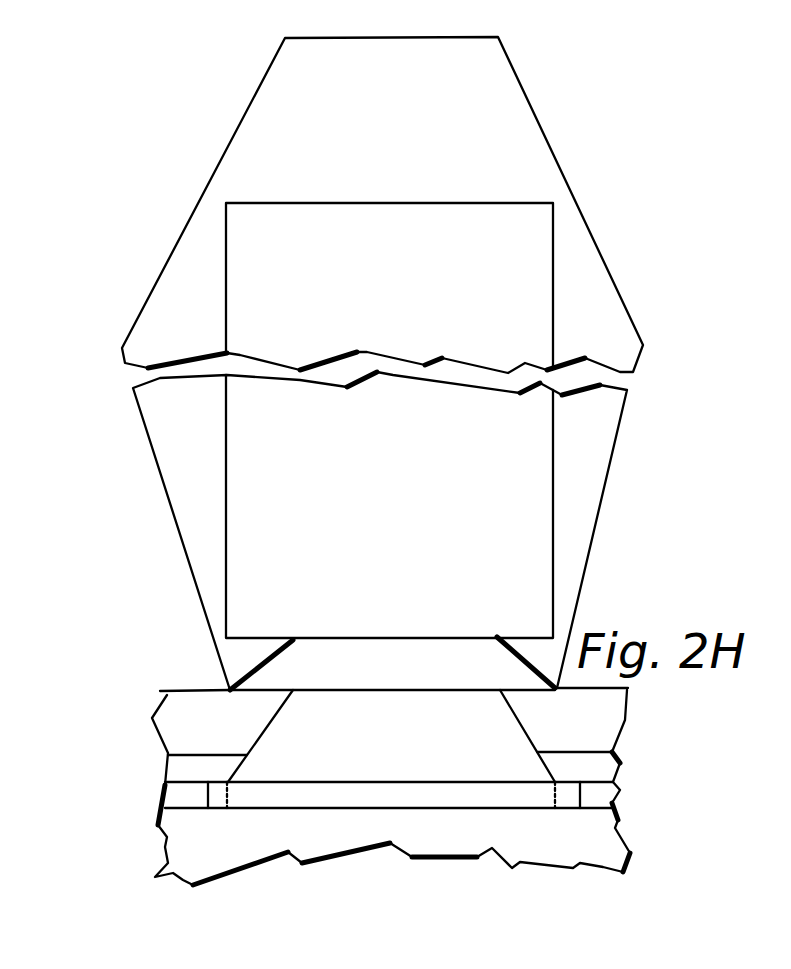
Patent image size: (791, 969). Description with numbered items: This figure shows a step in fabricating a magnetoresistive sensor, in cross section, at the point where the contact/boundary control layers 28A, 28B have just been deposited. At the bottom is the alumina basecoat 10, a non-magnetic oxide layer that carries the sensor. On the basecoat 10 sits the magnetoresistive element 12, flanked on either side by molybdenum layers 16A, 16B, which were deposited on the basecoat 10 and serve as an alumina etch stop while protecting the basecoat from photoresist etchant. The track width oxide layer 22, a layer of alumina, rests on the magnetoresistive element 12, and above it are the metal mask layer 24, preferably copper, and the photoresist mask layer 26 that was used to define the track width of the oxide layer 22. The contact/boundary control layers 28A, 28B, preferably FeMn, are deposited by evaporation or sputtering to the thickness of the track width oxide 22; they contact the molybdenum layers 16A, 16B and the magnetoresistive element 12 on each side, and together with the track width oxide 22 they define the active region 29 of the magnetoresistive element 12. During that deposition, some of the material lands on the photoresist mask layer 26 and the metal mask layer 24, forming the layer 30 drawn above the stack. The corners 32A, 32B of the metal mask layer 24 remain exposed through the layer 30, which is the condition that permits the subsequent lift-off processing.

The alumina basecoat 10 is at (200, 865).
The magnetoresistive element 12 is at (222, 797).
The molybdenum layer 16A is at (187, 795).
The molybdenum layer 16B is at (592, 792).
The track width oxide layer 22 is at (473, 749).
The metal mask layer 24 is at (346, 676).
The photoresist mask layer 26 is at (333, 483).
The contact/boundary control layer 28A is at (177, 707).
The contact/boundary control layer 28B is at (187, 772).
The active region 29 is at (401, 797).
The layer 30 is at (245, 146).
The corner of metal mask layer 32A is at (229, 689).
The corner of metal mask layer 32B is at (556, 688).